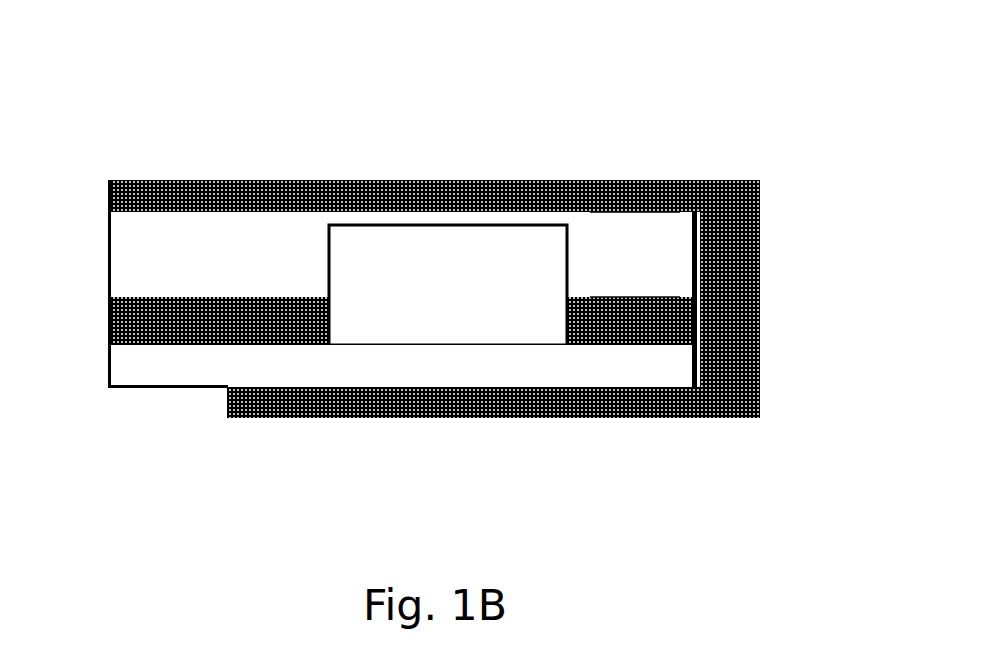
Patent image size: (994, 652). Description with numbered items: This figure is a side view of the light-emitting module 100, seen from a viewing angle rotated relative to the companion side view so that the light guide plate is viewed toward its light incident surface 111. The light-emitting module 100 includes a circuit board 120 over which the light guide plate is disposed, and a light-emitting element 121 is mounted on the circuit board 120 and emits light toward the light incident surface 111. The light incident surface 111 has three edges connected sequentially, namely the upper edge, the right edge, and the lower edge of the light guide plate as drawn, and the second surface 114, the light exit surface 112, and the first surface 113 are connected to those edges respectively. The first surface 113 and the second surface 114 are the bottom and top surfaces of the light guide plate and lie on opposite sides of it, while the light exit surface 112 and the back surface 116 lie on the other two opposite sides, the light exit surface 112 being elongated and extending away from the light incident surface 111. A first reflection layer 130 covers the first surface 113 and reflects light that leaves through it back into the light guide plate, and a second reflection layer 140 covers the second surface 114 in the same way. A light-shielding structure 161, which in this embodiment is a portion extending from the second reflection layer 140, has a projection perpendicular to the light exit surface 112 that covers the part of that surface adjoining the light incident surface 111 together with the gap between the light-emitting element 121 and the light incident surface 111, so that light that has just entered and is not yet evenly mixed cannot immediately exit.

The light-emitting module 100 is at (112, 86).
The light incident surface 111 is at (235, 268).
The light exit surface 112 is at (695, 258).
The first surface 113 is at (622, 298).
The second surface 114 is at (627, 210).
The back surface 116 is at (108, 248).
The circuit board 120 is at (160, 370).
The light-emitting element 121 is at (447, 248).
The first reflection layer 130 is at (124, 322).
The second reflection layer 140 is at (273, 210).
The light-shielding structure 161 is at (740, 328).